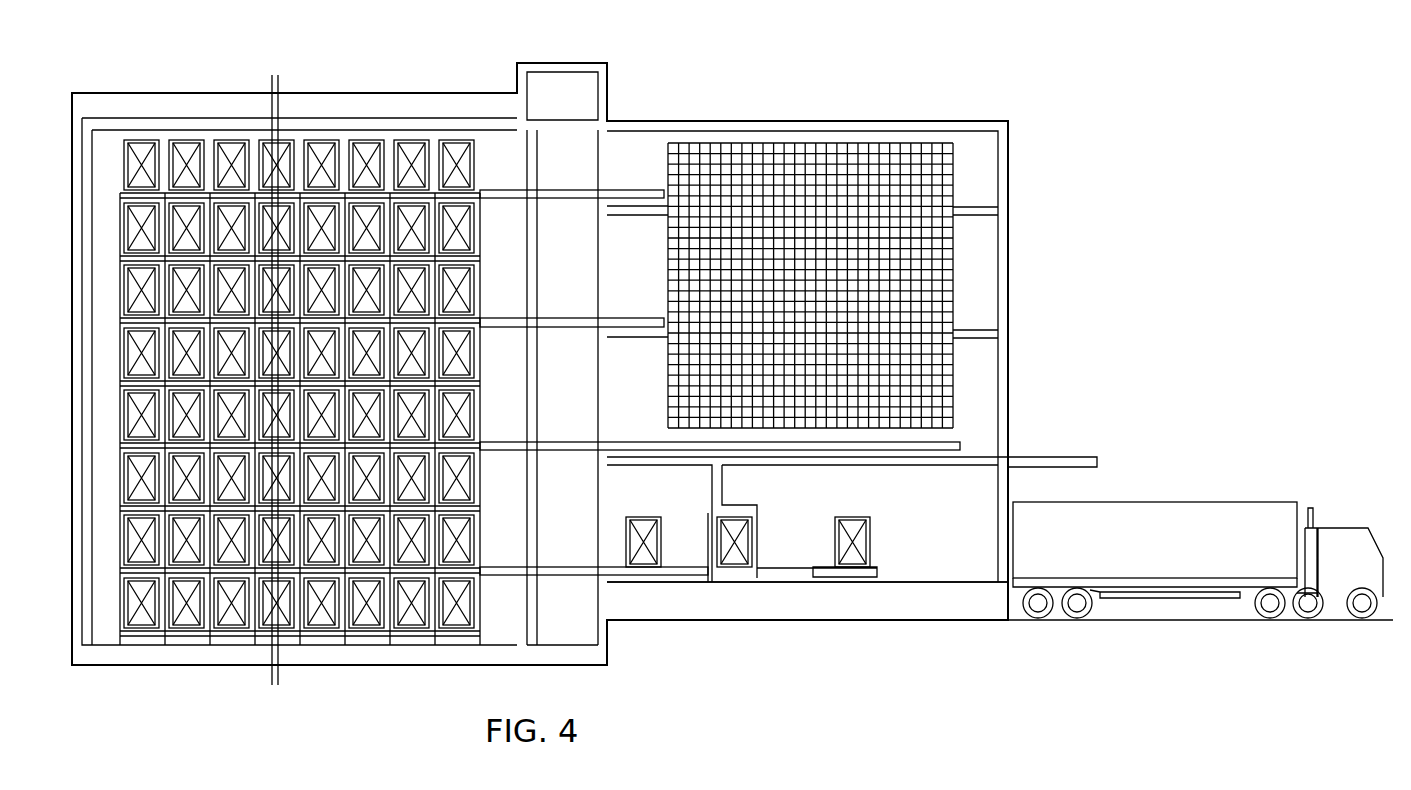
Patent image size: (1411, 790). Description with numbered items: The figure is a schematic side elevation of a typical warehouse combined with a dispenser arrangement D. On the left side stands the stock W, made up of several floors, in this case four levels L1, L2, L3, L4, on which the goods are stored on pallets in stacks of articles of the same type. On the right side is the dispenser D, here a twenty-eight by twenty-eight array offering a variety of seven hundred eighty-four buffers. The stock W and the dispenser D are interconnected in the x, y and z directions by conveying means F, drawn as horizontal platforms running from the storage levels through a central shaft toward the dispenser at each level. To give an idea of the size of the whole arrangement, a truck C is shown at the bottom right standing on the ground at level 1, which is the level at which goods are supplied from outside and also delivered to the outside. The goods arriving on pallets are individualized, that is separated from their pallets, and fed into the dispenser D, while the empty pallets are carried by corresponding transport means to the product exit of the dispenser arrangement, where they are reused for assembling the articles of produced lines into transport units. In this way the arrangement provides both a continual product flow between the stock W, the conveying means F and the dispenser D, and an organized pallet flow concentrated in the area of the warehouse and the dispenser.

The stock W is at (373, 112).
The dispenser arrangement D is at (918, 143).
The level L4 is at (977, 208).
The level L3 is at (973, 332).
The level L2 is at (973, 453).
The level L1 is at (1055, 582).
The conveying means F is at (560, 200).
The truck C is at (1196, 518).
The level 1 is at (1190, 622).